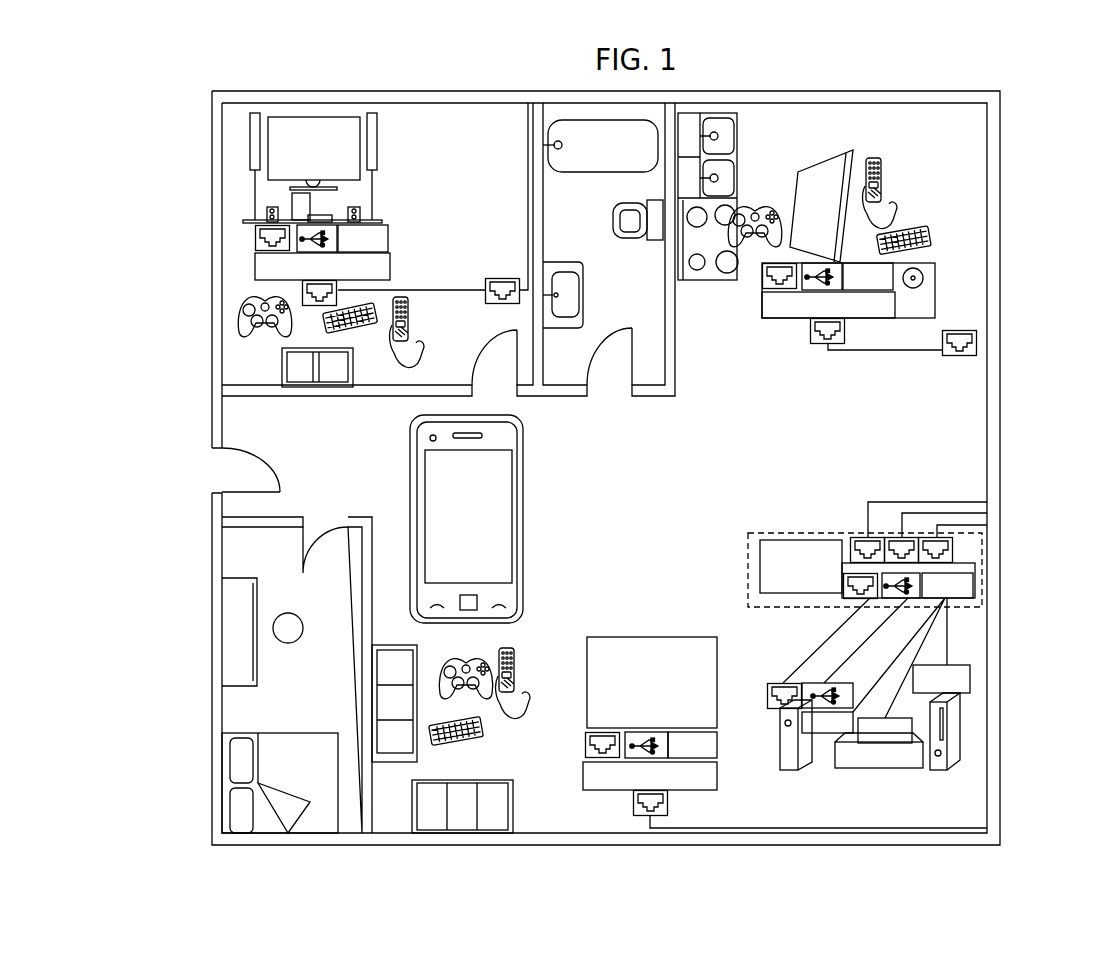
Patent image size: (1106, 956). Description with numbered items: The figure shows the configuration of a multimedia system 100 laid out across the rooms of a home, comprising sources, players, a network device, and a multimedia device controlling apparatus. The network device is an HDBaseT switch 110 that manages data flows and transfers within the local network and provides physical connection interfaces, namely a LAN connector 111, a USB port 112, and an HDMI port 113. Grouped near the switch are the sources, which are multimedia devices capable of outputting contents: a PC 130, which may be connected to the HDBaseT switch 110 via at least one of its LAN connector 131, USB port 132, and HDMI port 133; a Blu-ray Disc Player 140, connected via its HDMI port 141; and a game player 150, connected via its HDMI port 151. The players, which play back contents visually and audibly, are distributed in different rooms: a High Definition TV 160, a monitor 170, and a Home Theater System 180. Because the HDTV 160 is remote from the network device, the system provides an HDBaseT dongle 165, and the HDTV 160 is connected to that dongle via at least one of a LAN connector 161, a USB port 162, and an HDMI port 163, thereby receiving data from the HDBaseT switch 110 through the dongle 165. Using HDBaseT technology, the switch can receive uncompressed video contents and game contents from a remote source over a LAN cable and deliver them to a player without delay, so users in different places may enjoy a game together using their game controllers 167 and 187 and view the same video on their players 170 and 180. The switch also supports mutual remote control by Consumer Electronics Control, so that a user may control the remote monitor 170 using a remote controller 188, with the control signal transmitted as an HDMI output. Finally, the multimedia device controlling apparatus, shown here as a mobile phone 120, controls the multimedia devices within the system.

The multimedia system 100 is at (1010, 143).
The HDBaseT switch 110 is at (903, 588).
The LAN connector 111 is at (842, 580).
The USB port 112 is at (920, 575).
The HDMI port of hub 113 is at (973, 585).
The mobile phone 120 is at (512, 462).
The PC 130 is at (787, 730).
The LAN connector 131 is at (767, 700).
The USB port 132 is at (783, 683).
The HDMI port 133 is at (822, 733).
The Blu-ray Disc Player 140 is at (887, 768).
The HDMI port 141 is at (877, 743).
The game player 150 is at (991, 715).
The HDMI port 151 is at (970, 673).
The High Definition TV 160 is at (647, 648).
The LAN connector 161 is at (585, 745).
The USB port 162 is at (640, 735).
The HDMI port 163 is at (717, 745).
The HDBaseT dongle 165 is at (758, 764).
The game controller 167 is at (440, 673).
The monitor 170 is at (840, 178).
The Home Theater System 180 is at (355, 140).
The game controller 187 is at (243, 315).
The remote controller 188 is at (400, 297).